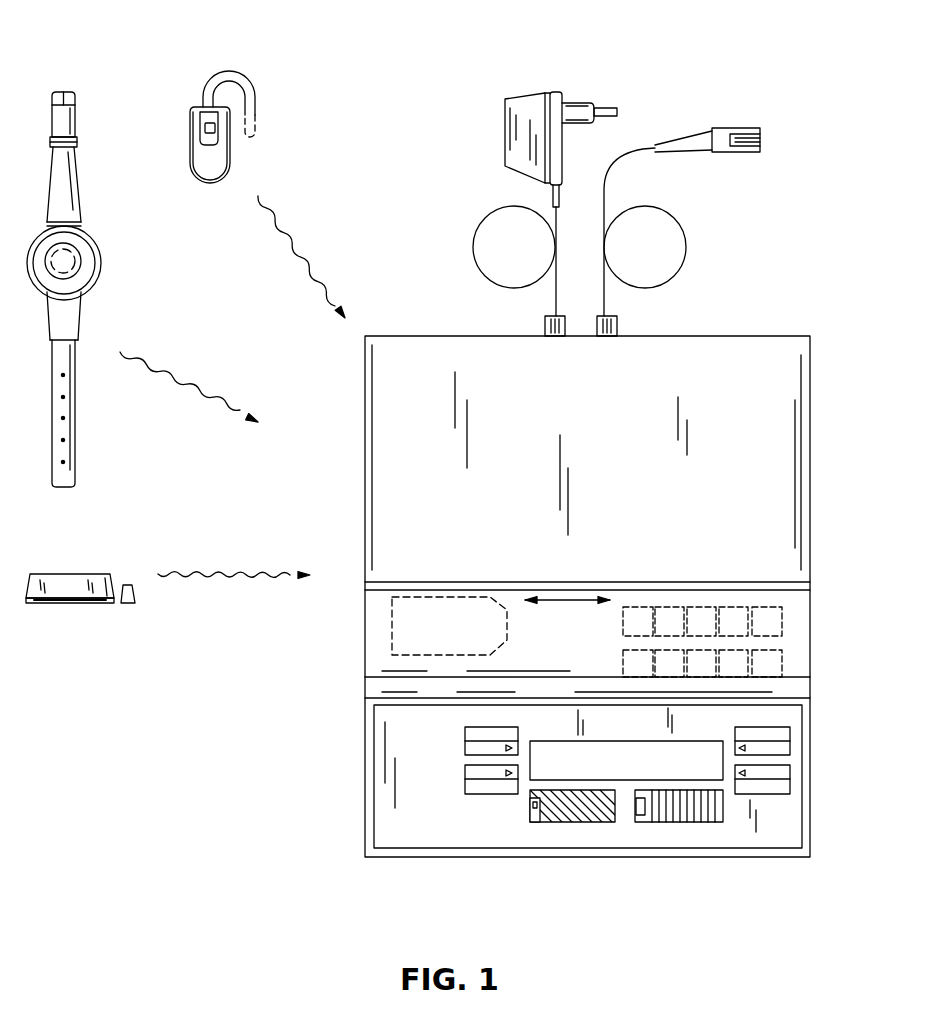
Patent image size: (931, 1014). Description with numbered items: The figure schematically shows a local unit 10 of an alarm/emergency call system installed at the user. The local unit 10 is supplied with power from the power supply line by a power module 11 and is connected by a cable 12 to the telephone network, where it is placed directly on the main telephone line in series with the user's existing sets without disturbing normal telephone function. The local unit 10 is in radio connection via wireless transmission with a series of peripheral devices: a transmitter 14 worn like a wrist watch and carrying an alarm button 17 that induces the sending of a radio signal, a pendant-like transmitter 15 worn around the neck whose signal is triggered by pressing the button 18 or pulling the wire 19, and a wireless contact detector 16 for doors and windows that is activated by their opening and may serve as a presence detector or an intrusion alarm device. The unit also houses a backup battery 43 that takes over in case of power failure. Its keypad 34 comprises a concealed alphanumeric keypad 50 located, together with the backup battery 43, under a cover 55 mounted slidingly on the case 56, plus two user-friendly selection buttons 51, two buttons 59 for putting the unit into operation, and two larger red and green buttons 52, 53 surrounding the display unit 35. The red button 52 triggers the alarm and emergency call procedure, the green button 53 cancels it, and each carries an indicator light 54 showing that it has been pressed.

The local unit 10 is at (589, 577).
The power module 11 is at (503, 118).
The cable 12 is at (633, 150).
The transmitter 14 is at (91, 287).
The transmitter 15 is at (221, 96).
The wireless contact detector 16 is at (62, 572).
The alarm button 17 is at (72, 258).
The button 18 is at (208, 128).
The wire 19 is at (258, 100).
The keypad 34 is at (802, 663).
The display unit 35 is at (633, 765).
The backup battery 43 is at (392, 632).
The concealed alphanumeric keypad 50 is at (698, 605).
The selection buttons 51 is at (465, 740).
The red button 52 is at (590, 822).
The green button 53 is at (693, 822).
The indicator light 54 is at (512, 775).
The cover 55 is at (584, 653).
The case 56 is at (378, 522).
The buttons 59 is at (790, 773).